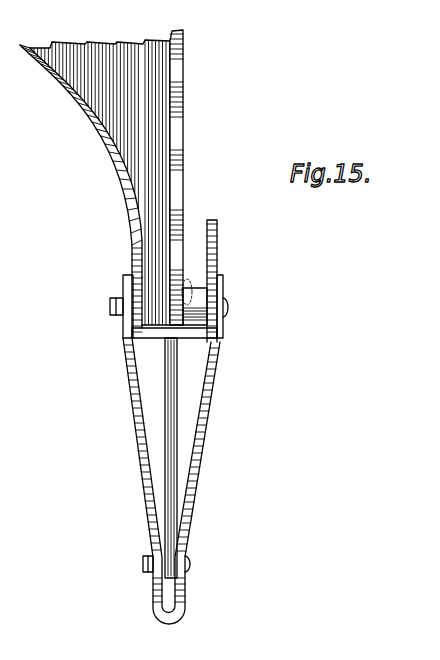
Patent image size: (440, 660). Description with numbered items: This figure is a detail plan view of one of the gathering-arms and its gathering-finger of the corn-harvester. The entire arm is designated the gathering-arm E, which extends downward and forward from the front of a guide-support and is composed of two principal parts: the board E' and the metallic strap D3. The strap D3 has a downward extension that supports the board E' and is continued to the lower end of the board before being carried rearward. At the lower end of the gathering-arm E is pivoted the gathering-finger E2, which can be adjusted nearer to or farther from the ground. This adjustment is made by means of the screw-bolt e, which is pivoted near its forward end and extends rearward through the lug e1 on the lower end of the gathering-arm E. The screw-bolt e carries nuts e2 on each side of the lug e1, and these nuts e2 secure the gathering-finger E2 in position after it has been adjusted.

The gathering-arm E is at (81, 191).
The board E' is at (106, 177).
The gathering-finger E2 is at (138, 433).
The metallic strap D3 is at (217, 268).
The screw-bolt e is at (177, 394).
The lug e1 is at (190, 290).
The nuts e2 is at (177, 336).